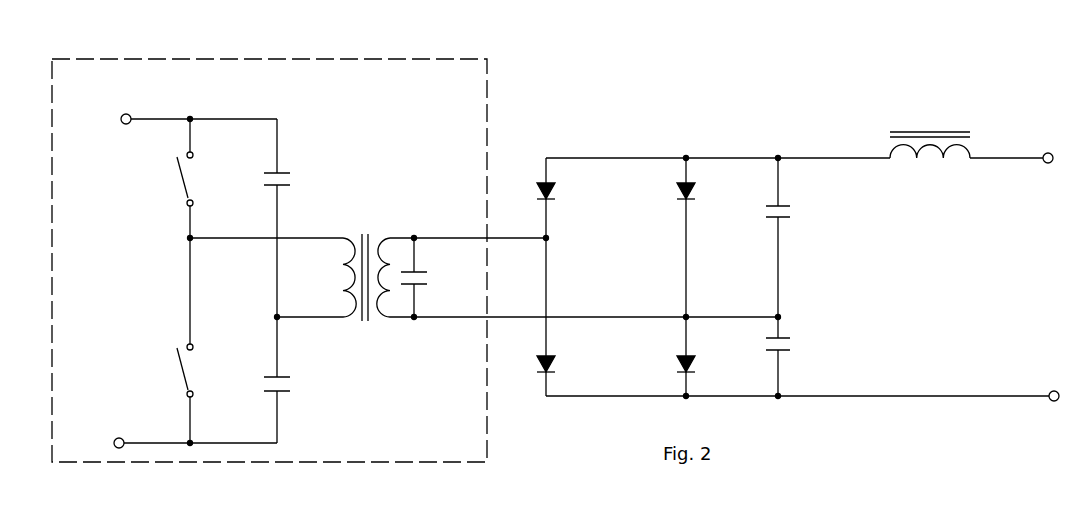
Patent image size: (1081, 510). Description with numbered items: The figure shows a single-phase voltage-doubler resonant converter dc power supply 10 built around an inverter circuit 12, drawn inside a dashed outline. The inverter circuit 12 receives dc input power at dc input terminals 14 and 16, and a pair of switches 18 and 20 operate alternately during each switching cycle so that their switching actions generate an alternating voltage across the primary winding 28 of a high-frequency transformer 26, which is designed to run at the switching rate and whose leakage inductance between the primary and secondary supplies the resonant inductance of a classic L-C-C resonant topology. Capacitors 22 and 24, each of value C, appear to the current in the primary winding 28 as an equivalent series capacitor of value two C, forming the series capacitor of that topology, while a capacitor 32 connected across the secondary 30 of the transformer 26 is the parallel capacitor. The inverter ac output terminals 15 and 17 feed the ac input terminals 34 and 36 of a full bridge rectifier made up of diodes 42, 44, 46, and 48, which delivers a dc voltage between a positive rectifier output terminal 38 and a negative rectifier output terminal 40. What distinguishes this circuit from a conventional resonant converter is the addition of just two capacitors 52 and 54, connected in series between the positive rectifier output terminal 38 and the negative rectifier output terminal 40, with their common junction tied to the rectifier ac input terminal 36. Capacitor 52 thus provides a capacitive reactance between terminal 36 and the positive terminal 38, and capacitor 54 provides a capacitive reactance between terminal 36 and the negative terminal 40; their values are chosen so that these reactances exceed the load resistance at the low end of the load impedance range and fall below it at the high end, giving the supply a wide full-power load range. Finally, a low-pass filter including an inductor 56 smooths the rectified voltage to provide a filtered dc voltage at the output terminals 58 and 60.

The dc power supply 10 is at (587, 103).
The inverter circuit 12 is at (488, 451).
The dc input terminal 14 is at (157, 118).
The ac output terminal 15 is at (488, 238).
The dc input terminal 16 is at (150, 443).
The ac output terminal 17 is at (488, 317).
The switch 18 is at (187, 187).
The switch 20 is at (187, 378).
The capacitor 22 is at (279, 169).
The capacitor 24 is at (279, 373).
The transformer 26 is at (365, 320).
The primary winding 28 is at (328, 238).
The secondary 30 is at (398, 238).
The capacitor 32 is at (416, 268).
The ac input terminal 34 is at (548, 238).
The ac input terminal 36 is at (687, 317).
The positive rectifier output terminal 38 is at (687, 158).
The negative rectifier output terminal 40 is at (687, 396).
The diode 42 is at (548, 170).
The diode 44 is at (547, 372).
The diode 46 is at (687, 223).
The diode 48 is at (685, 372).
The capacitor 52 is at (780, 197).
The capacitor 54 is at (780, 330).
The inductor 56 is at (902, 130).
The output terminal 58 is at (1015, 158).
The output terminal 60 is at (1023, 396).